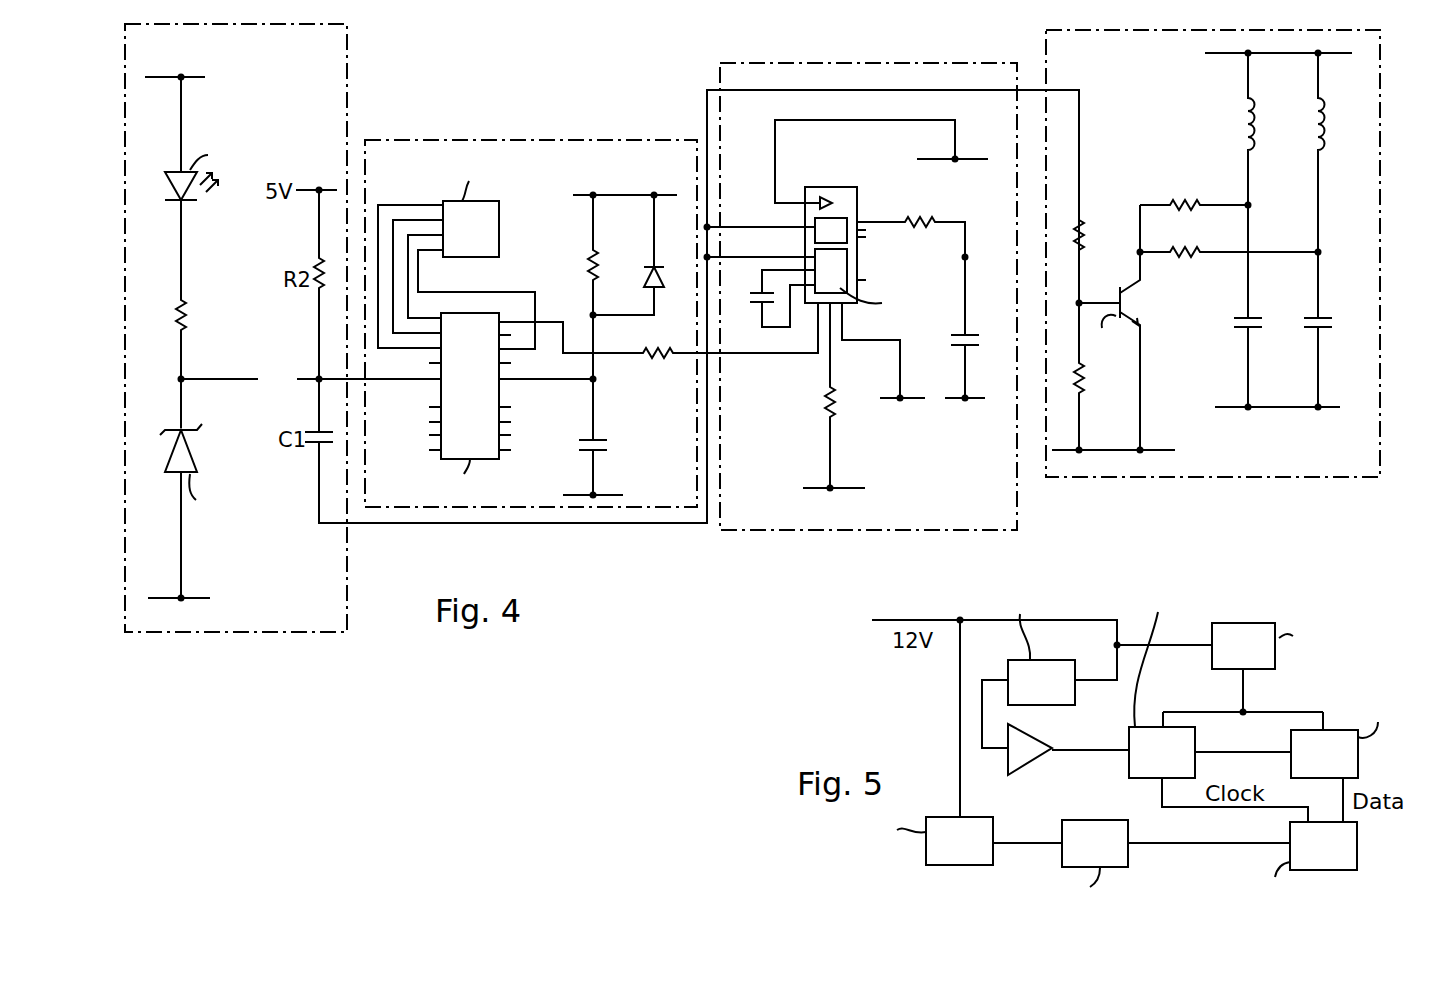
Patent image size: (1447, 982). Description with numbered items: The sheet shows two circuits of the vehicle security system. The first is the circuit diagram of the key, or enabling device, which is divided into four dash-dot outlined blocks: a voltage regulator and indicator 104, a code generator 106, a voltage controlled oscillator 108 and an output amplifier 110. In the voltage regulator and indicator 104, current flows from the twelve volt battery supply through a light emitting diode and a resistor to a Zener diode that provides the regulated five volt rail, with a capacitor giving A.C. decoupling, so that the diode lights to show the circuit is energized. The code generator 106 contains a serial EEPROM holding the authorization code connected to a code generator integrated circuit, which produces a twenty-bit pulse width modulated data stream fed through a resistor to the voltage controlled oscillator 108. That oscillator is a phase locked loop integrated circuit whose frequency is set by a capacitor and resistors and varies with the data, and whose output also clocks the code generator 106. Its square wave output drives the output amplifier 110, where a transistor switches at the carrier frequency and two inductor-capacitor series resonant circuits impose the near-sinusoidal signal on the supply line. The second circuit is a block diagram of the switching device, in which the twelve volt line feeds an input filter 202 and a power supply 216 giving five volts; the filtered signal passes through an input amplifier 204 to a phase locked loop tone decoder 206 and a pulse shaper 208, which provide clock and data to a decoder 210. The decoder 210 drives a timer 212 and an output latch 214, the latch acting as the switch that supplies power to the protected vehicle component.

In FIG. 4, the voltage regulator and indicator 104 is at (347, 105).
In FIG. 4, the code generator 106 is at (478, 140).
In FIG. 4, the voltage controlled oscillator 108 is at (870, 531).
In FIG. 4, the output amplifier 110 is at (1278, 478).
In FIG. 5, the input filter 202 is at (1066, 698).
In FIG. 5, the input amplifier 204 is at (1033, 760).
In FIG. 5, the phase locked loop tone decoder 206 is at (1187, 769).
In FIG. 5, the pulse shaper 208 is at (1349, 770).
In FIG. 5, the decoder 210 is at (1348, 862).
In FIG. 5, the timer 212 is at (1120, 859).
In FIG. 5, the output latch 214 is at (984, 857).
In FIG. 5, the power supply 216 is at (1269, 662).